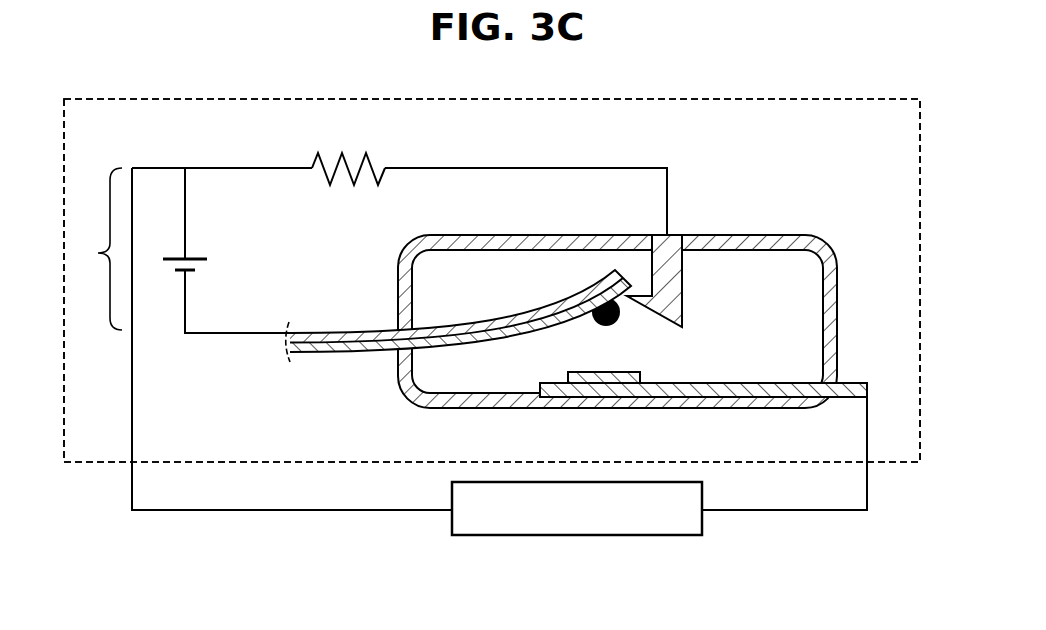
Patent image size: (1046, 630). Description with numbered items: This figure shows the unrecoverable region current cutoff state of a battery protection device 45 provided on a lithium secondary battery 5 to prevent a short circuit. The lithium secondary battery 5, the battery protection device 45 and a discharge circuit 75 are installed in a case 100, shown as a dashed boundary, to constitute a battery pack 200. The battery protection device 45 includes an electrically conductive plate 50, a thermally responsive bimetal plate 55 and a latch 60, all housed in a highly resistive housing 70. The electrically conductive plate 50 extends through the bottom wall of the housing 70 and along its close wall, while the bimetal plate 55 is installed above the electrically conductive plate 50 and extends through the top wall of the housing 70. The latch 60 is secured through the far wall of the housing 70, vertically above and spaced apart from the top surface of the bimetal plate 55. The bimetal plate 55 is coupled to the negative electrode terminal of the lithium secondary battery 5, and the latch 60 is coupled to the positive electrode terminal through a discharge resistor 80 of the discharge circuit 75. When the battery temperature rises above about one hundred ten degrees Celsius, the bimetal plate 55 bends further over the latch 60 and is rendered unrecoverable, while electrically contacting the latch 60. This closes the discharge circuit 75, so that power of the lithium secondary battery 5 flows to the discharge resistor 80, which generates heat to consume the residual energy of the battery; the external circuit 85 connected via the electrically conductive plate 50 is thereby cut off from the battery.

The lithium secondary battery 5 is at (208, 248).
The battery protection device 45 is at (597, 289).
The electrically conductive plate 50 is at (860, 383).
The bimetal plate 55 is at (343, 333).
The latch 60 is at (678, 235).
The housing 70 is at (495, 237).
The discharge circuit 75 is at (94, 249).
The discharge resistor 80 is at (373, 150).
The external circuit 85 is at (662, 537).
The case 100 is at (683, 100).
The battery pack 200 is at (840, 98).